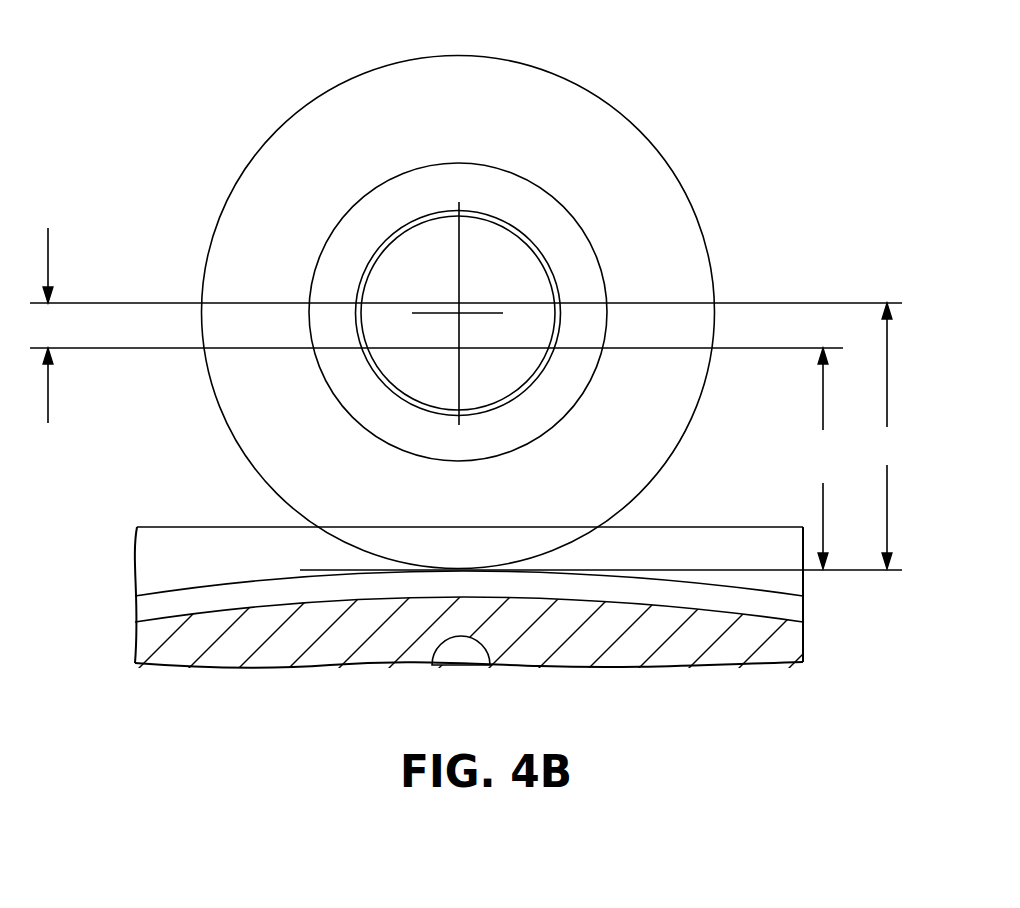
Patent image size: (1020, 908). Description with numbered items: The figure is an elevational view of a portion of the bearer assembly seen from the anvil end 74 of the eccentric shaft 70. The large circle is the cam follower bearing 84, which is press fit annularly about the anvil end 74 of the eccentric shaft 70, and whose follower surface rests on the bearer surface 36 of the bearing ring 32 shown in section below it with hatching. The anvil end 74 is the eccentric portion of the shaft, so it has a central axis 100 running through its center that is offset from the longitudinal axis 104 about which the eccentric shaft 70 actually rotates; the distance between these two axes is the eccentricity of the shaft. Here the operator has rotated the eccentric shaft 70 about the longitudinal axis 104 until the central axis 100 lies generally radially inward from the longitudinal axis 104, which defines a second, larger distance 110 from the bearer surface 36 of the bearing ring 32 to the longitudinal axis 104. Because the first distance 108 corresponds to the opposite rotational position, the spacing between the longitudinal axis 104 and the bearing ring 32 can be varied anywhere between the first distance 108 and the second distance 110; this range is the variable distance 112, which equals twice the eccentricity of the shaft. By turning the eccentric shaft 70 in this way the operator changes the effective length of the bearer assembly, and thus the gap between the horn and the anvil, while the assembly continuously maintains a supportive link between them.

The bearing ring 32 is at (792, 640).
The bearer surface 36 is at (217, 582).
The eccentric shaft 70 is at (470, 262).
The anvil end 74 is at (415, 255).
The cam follower bearing 84 is at (573, 80).
The central axis 100 is at (459, 303).
The longitudinal axis 104 is at (459, 303).
The first distance 108 is at (826, 458).
The second distance 110 is at (886, 436).
The variable distance 112 is at (48, 256).